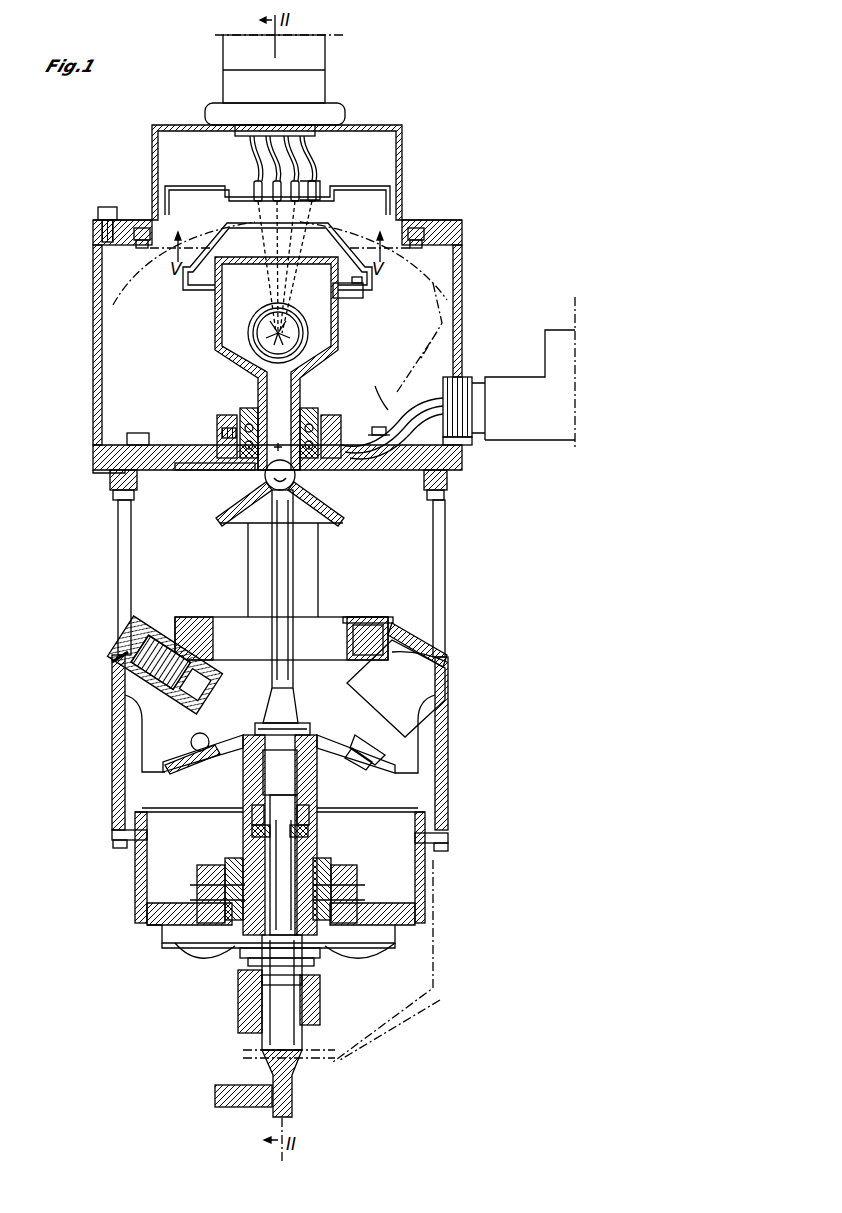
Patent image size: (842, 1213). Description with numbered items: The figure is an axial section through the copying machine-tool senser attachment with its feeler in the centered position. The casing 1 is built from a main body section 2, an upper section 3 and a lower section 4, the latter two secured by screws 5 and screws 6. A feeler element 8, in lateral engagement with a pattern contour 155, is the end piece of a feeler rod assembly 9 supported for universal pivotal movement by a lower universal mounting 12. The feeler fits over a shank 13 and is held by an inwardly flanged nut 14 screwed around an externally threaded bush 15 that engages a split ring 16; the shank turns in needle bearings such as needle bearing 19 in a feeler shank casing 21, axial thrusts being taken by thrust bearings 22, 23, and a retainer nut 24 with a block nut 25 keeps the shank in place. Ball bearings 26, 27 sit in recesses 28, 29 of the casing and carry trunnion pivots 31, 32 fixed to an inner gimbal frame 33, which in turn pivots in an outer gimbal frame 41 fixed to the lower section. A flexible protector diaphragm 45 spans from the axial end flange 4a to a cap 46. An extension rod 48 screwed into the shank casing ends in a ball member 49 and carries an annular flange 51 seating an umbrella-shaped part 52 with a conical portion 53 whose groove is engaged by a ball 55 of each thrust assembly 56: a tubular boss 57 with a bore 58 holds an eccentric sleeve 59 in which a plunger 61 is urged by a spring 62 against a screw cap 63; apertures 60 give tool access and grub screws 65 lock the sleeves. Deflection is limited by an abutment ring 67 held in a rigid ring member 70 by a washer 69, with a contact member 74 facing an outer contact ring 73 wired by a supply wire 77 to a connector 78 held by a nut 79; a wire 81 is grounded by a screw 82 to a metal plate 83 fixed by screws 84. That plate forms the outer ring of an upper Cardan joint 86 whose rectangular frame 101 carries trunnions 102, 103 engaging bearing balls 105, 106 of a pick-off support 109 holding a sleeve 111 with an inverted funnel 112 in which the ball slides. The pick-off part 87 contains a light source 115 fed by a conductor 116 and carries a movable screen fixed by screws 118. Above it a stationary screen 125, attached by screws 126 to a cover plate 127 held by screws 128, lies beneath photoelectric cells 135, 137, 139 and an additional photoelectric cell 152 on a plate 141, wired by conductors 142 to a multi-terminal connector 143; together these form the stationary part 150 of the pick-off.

The casing 1 is at (466, 302).
The main body section 2 is at (112, 792).
The upper section 3 is at (462, 240).
The lower section 4 is at (135, 855).
The axial end flange 4a is at (395, 946).
The screws 5 is at (447, 497).
The screws 6 is at (112, 836).
The feeler element 8 is at (300, 1065).
The feeler rod assembly 9 is at (320, 805).
The lower universal mounting 12 is at (348, 862).
The shank 13 is at (320, 1010).
The inwardly flanged nut 14 is at (248, 1028).
The externally threaded bush 15 is at (240, 1000).
The split ring 16 is at (245, 1020).
The needle bearing 19 is at (268, 860).
The feeler shank casing 21 is at (318, 980).
The thrust bearing 22 is at (245, 958).
The thrust bearing 23 is at (252, 818).
The retainer nut 24 is at (310, 822).
The block nut 25 is at (255, 830).
The ball bearing 26 is at (195, 958).
The ball bearing 27 is at (345, 958).
The recess 28 is at (234, 860).
The recess 29 is at (324, 866).
The trunnion pivot 31 is at (197, 892).
The trunnion pivot 32 is at (355, 890).
The inner gimbal frame 33 is at (208, 866).
The outer gimbal frame 41 is at (400, 912).
The flexible protector diaphragm 45 is at (375, 1003).
The cap 46 is at (250, 964).
The extension rod 48 is at (293, 680).
The ball member 49 is at (268, 485).
The annular flange 51 is at (245, 780).
The flange 52 is at (305, 725).
The conical portion 53 is at (395, 768).
The ball 55 is at (185, 758).
The thrust assembly 56 is at (215, 683).
The tubular boss 57 is at (210, 690).
The bore 58 is at (190, 742).
The sleeve 59 is at (140, 700).
The apertures 60 is at (118, 541).
The plunger 61 is at (142, 750).
The spring 62 is at (130, 682).
The screw cap 63 is at (140, 645).
The grub screws 65 is at (112, 668).
The abutment ring 67 is at (365, 640).
The washer 69 is at (388, 620).
The rigid ring member 70 is at (445, 678).
The outer contact ring 73 is at (355, 618).
The contact member 74 is at (322, 640).
The supply wire 77 is at (408, 420).
The connector 78 is at (543, 432).
The nut 79 is at (466, 445).
The wire 81 is at (404, 465).
The screw 82 is at (380, 427).
The metal plate 83 is at (348, 465).
The screws 84 is at (127, 438).
The upper Cardan joint 86 is at (320, 462).
The pick-off part 87 is at (215, 330).
The rectangular frame 101 is at (222, 433).
The trunnion 102 is at (333, 415).
The trunnion 103 is at (224, 415).
The bearing balls 105 is at (315, 410).
The bearing balls 106 is at (248, 410).
The pick-off support 109 is at (248, 470).
The sleeve 111 is at (300, 385).
The inverted funnel 112 is at (328, 524).
The light source 115 is at (288, 336).
The conductor 116 is at (386, 410).
The screws 118 is at (363, 293).
The stationary screen 125 is at (392, 238).
The screws 126 is at (136, 244).
The cover plate 127 is at (402, 128).
The screws 128 is at (98, 213).
The photoelectric cell 135 is at (262, 230).
The photoelectric cell 137 is at (256, 193).
The photoelectric cell 139 is at (298, 228).
The plate 141 is at (392, 188).
The conductors 142 is at (250, 165).
The multi-terminal connector 143 is at (322, 80).
The stationary part 150 is at (345, 200).
The additional photoelectric cell 152 is at (316, 190).
The pattern contour 155 is at (232, 1090).